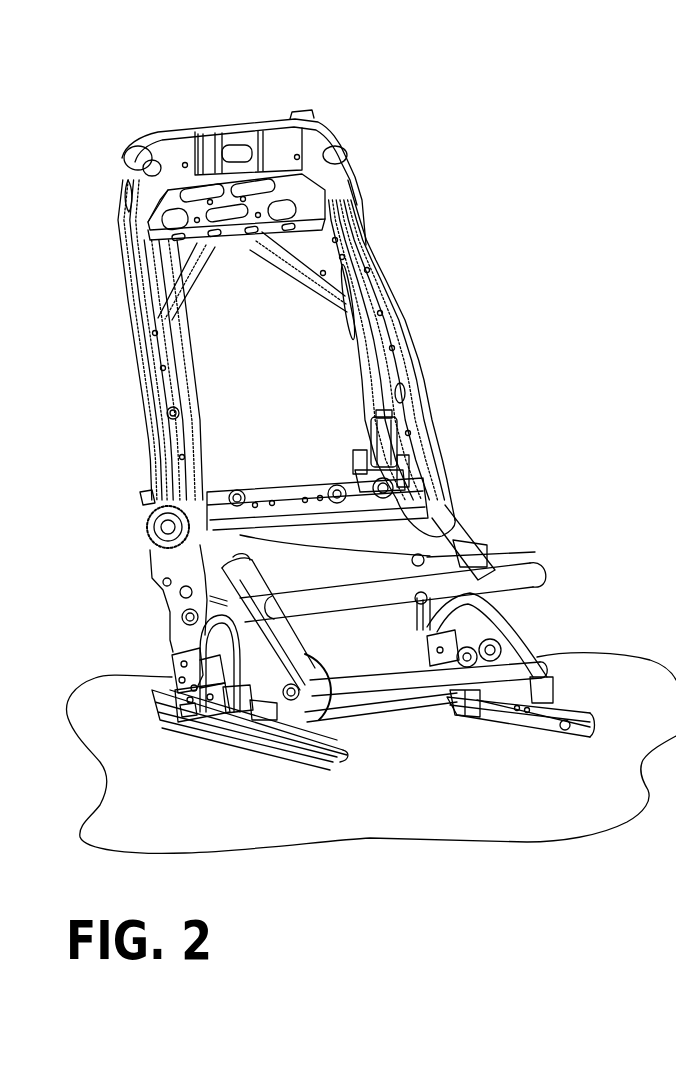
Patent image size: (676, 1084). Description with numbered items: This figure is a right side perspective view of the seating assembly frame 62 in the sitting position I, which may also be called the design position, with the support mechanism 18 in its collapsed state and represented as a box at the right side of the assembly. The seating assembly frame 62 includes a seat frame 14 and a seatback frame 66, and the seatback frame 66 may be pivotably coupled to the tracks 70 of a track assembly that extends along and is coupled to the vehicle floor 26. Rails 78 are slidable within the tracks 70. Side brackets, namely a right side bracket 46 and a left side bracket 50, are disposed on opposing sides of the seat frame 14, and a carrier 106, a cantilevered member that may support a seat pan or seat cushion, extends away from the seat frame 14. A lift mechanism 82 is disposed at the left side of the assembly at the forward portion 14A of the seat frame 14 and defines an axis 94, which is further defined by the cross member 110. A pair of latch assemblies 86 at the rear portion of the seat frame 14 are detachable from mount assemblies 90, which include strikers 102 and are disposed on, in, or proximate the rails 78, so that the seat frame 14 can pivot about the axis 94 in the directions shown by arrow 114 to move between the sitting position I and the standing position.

The sitting position I is at (437, 210).
The seatback frame 66 is at (155, 377).
The seating assembly frame 62 is at (480, 433).
The right side bracket 46 is at (170, 570).
The seat frame 14 is at (215, 638).
The carrier 106 is at (478, 577).
The arrow 114 is at (328, 673).
The left side bracket 50 is at (503, 628).
The forward portion 14A is at (545, 647).
The lift mechanism 82 is at (547, 672).
The cross member 110 is at (424, 680).
The rails 78 is at (493, 708).
The latch assemblies 86 is at (166, 663).
The support mechanism 18 is at (240, 713).
The tracks 70 is at (177, 718).
The mount assemblies 90 is at (182, 717).
The strikers 102 is at (190, 707).
The axis 94 is at (150, 704).
The vehicle floor 26 is at (590, 810).